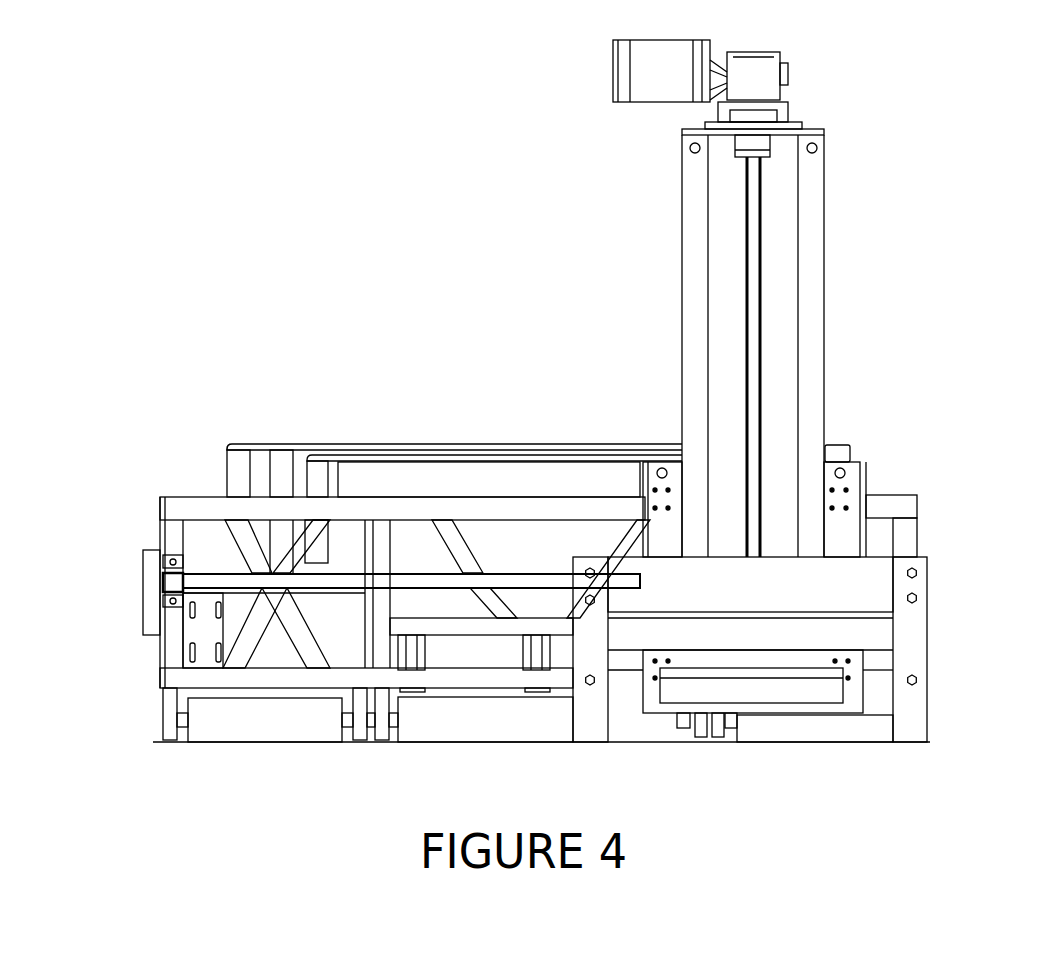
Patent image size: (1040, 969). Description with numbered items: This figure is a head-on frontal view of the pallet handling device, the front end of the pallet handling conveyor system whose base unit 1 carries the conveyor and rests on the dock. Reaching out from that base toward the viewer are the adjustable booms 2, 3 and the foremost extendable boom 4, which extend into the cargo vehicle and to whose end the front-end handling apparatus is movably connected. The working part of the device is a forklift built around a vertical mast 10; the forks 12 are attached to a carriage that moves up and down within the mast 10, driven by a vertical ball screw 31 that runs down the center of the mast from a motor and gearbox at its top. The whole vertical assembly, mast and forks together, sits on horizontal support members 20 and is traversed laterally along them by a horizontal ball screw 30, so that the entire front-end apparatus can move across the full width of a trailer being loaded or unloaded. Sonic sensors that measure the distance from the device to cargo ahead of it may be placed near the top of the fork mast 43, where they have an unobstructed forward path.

The pallet handling conveyor system base unit 1 is at (235, 468).
The adjustable boom 2 is at (283, 465).
The adjustable boom 3 is at (318, 465).
The foremost extendable boom 4 is at (523, 477).
The vertical mast 10 is at (817, 253).
The forks 12 is at (590, 718).
The horizontal support members 20 is at (200, 503).
The horizontal ball screw 30 is at (340, 578).
The vertical ball screw 31 is at (885, 303).
The top of fork mast 43 is at (807, 147).